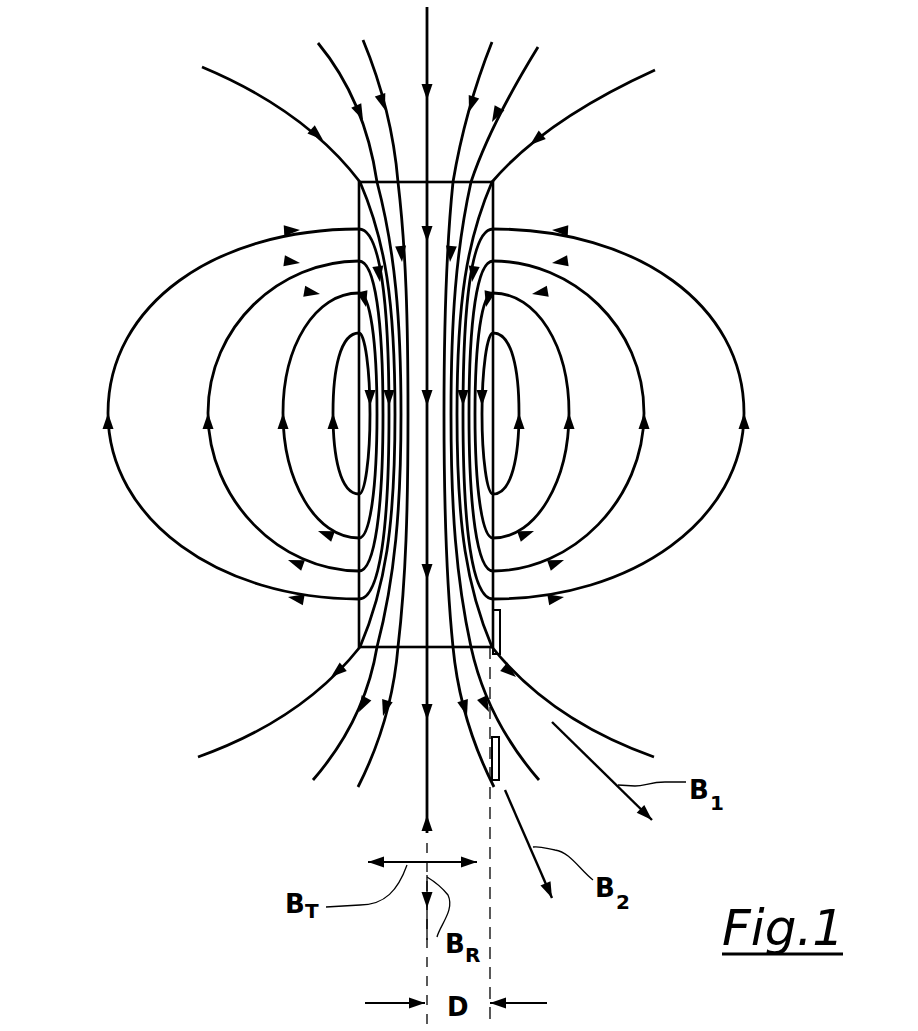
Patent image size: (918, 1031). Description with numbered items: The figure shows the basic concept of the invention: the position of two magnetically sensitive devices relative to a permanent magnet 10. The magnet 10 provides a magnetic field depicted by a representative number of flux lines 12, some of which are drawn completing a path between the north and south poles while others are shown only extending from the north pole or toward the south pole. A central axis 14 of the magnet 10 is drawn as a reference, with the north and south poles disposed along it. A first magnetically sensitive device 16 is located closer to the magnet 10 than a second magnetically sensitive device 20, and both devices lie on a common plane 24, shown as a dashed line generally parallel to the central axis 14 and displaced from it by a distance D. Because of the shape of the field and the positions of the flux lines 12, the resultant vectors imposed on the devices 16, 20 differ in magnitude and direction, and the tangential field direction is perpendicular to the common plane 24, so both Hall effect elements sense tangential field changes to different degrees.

The permanent magnet 10 is at (494, 322).
The flux lines 12 is at (606, 92).
The central axis 14 is at (424, 967).
The first magnetically sensitive device 16 is at (501, 646).
The second magnetically sensitive device 20 is at (500, 775).
The common plane 24 is at (491, 935).